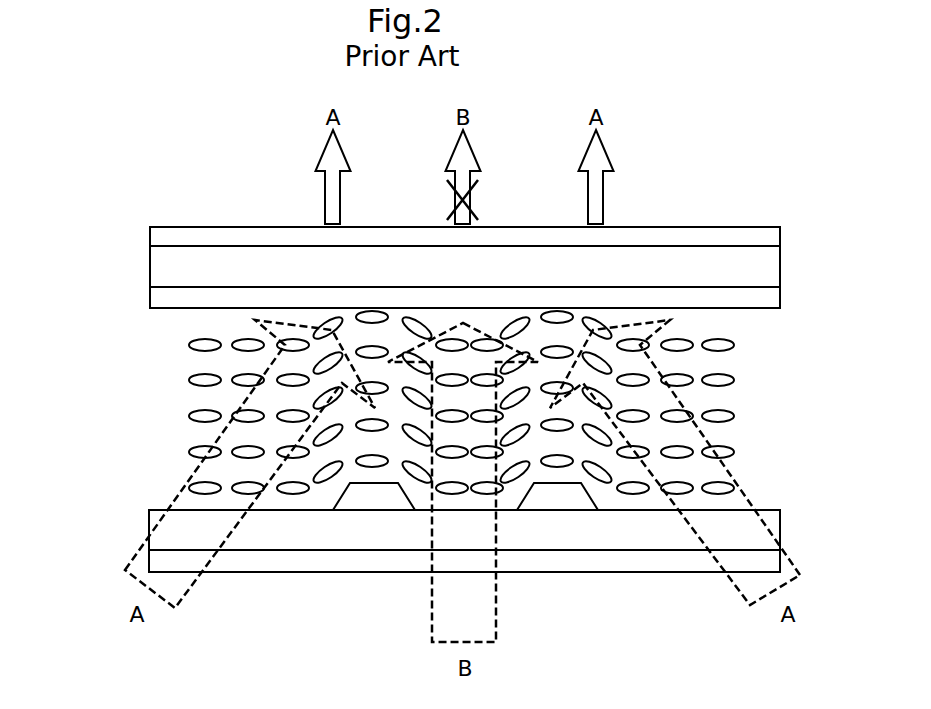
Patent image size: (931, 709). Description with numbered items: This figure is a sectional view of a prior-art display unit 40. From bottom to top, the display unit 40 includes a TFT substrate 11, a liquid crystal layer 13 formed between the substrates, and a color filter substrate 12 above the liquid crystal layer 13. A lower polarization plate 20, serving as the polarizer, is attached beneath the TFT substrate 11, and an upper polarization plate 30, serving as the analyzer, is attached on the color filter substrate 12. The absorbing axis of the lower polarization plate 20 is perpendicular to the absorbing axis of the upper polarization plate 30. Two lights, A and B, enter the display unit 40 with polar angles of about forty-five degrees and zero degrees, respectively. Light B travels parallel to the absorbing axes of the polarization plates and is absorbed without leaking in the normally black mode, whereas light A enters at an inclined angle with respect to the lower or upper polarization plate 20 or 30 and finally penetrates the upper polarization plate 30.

The display unit 40 is at (122, 204).
The upper polarization plate 30 is at (150, 233).
The color filter substrate 12 is at (150, 268).
The liquid crystal layer 13 is at (168, 397).
The TFT substrate 11 is at (149, 521).
The lower polarization plate 20 is at (313, 563).